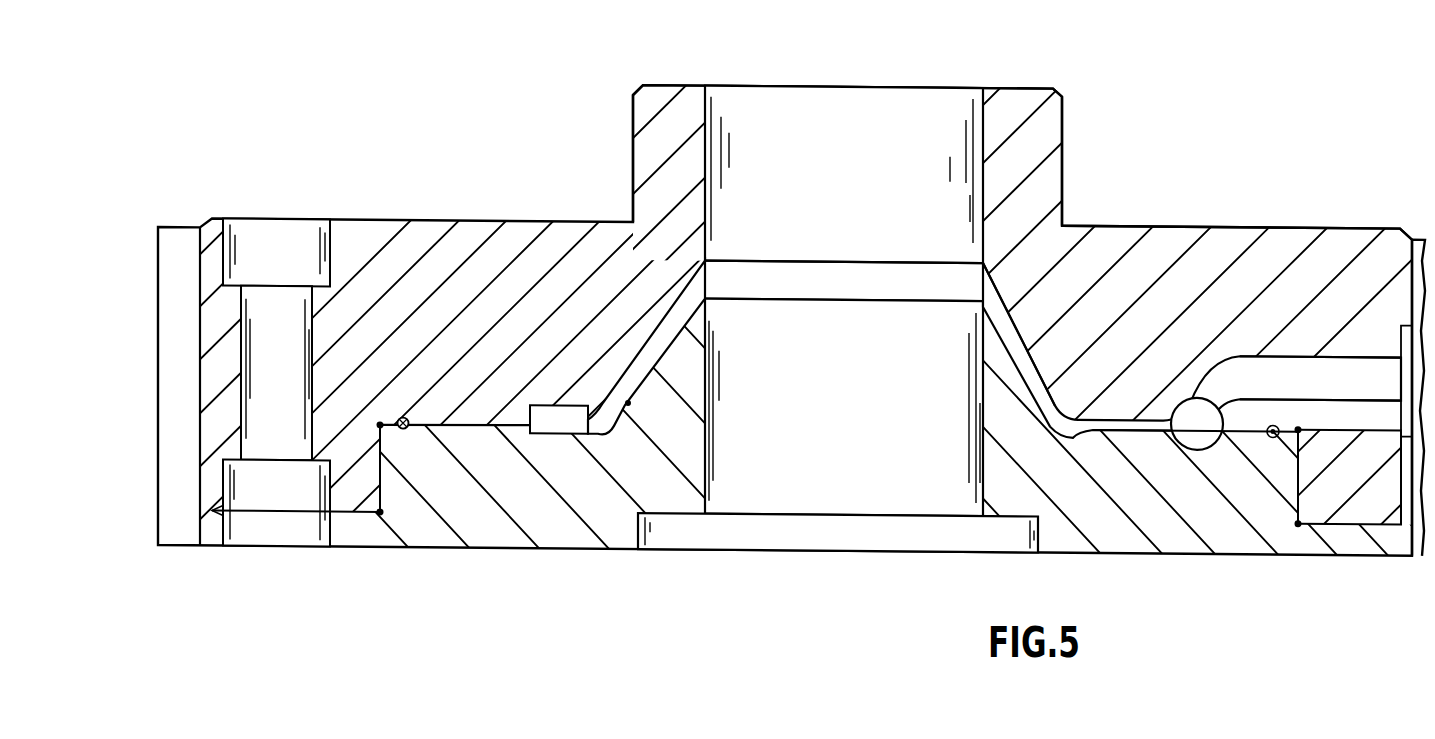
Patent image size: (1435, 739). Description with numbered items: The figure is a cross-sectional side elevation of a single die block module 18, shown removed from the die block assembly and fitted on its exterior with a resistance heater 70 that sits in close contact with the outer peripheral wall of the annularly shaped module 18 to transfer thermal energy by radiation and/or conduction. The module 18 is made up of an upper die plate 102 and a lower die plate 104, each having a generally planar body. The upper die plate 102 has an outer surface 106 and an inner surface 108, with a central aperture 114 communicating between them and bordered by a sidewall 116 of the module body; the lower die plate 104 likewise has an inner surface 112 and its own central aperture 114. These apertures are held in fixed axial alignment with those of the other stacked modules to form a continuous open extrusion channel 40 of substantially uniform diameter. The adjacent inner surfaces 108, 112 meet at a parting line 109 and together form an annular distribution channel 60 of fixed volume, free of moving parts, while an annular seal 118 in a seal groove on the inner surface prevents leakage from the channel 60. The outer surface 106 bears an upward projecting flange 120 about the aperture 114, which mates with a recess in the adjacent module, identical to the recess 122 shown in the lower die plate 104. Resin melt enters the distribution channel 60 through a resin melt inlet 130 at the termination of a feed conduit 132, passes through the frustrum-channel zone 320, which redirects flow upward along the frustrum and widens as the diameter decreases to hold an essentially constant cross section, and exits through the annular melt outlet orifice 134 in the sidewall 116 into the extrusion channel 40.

The module 18 is at (717, 368).
The extrusion channel 40 is at (861, 480).
The distribution channel 60 is at (1125, 423).
The resistance heater 70 is at (182, 399).
The upper die plate 102 is at (370, 238).
The lower die plate 104 is at (450, 517).
The outer surface 106 is at (1140, 217).
The inner surface 108 is at (645, 348).
The parting line 109 is at (477, 421).
The inner surface 112 is at (630, 398).
The central aperture 114 is at (789, 115).
The sidewall 116 is at (914, 121).
The annular seal 118 is at (403, 416).
The flange 120 is at (1062, 90).
The recess 122 is at (720, 535).
The resin melt inlet 130 is at (1196, 404).
The feed conduit 132 is at (1290, 365).
The melt outlet orifice 134 is at (825, 274).
The frustrum-channel zone 320 is at (1007, 328).